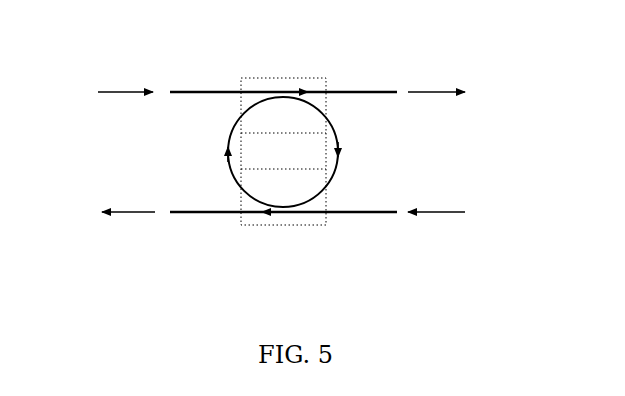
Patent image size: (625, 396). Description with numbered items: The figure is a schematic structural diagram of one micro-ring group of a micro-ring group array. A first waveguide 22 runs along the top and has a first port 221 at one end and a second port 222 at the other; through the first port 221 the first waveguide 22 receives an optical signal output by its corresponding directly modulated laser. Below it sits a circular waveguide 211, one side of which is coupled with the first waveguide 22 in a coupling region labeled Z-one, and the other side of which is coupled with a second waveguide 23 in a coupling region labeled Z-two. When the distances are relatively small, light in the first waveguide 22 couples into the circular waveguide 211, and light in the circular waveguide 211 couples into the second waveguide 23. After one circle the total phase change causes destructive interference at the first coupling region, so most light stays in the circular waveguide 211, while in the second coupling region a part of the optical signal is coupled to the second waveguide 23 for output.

The first waveguide 22 is at (281, 140).
The first port 221 is at (178, 92).
The second port 222 is at (387, 92).
The second waveguide 23 is at (358, 215).
The circular waveguide 211 is at (473, 165).